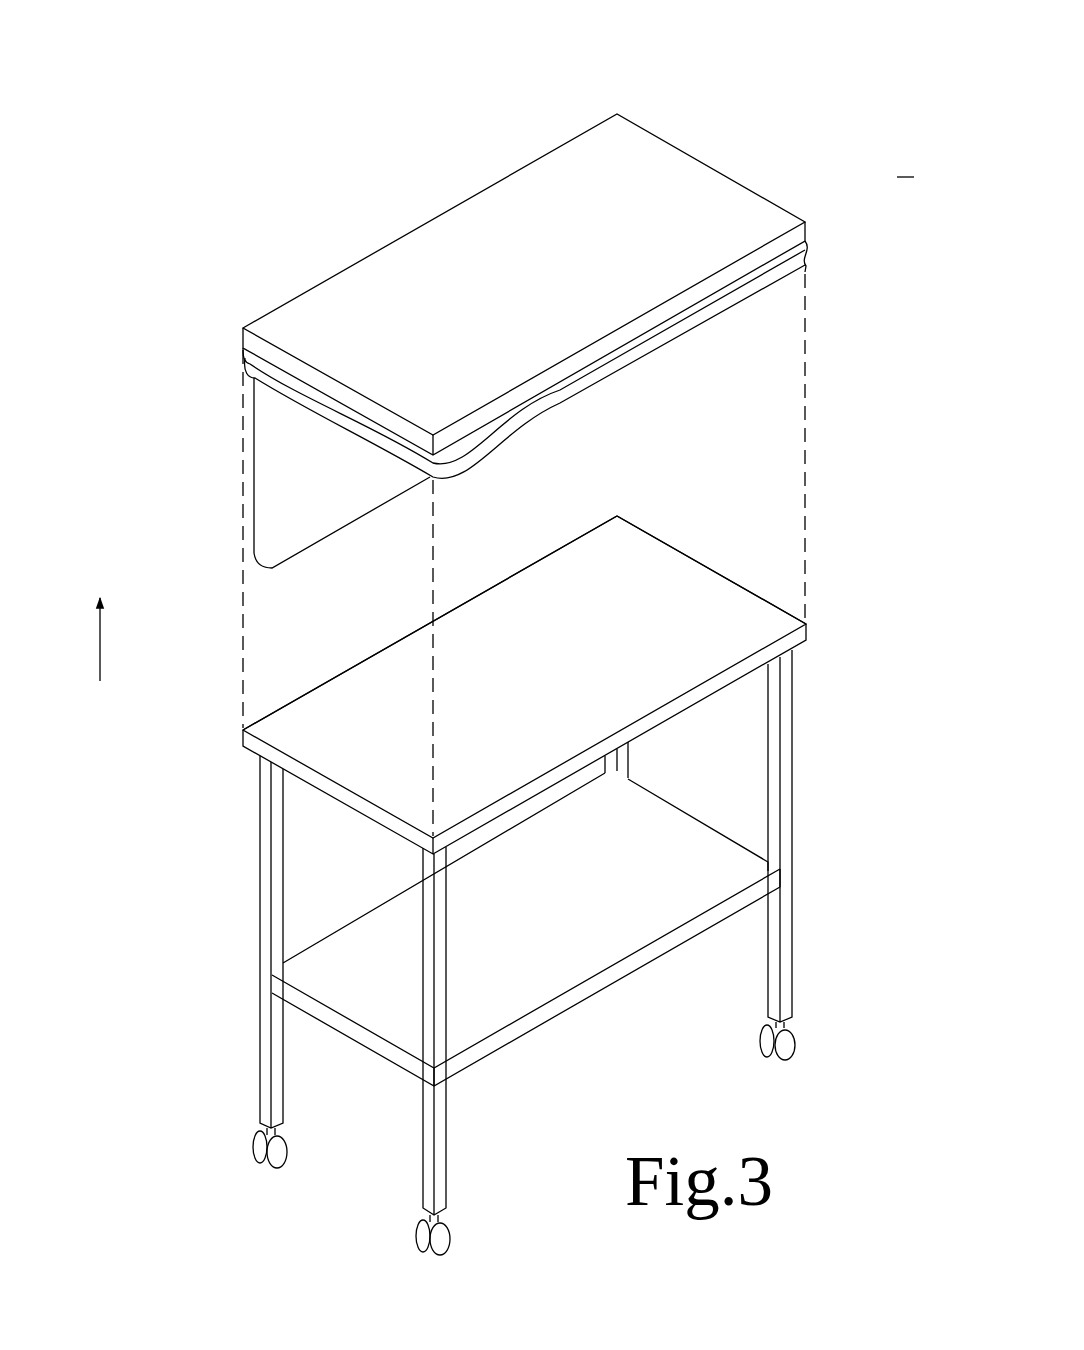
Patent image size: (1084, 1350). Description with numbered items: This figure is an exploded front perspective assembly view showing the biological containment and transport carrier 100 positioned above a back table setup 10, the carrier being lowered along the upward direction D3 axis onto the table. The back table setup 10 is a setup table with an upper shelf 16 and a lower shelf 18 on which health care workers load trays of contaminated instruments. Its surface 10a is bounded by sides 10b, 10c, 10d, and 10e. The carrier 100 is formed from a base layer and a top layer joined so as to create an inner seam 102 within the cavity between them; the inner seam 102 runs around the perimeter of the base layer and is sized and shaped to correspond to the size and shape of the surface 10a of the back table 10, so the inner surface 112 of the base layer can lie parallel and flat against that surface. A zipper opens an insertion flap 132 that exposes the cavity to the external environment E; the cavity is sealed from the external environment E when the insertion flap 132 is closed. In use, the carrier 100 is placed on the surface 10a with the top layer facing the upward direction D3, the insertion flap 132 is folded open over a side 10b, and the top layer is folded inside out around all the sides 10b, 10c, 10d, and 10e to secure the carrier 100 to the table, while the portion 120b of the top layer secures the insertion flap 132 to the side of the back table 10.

The biological containment and transport carrier 100 is at (202, 207).
The inner surface of the base layer 112 is at (503, 260).
The inner seam 102 is at (338, 270).
The portion of the top layer 120b is at (735, 300).
The insertion flap 132 is at (280, 492).
The back table setup 10 is at (243, 992).
The surface of the back table 10a is at (706, 618).
The side of the back table 10b is at (300, 697).
The side of the back table 10c is at (323, 782).
The side of the back table 10d is at (678, 702).
The side of the back table 10e is at (677, 545).
The upper shelf 16 is at (780, 647).
The lower shelf 18 is at (742, 900).
The external environment E is at (905, 163).
The upward direction D3 is at (155, 641).